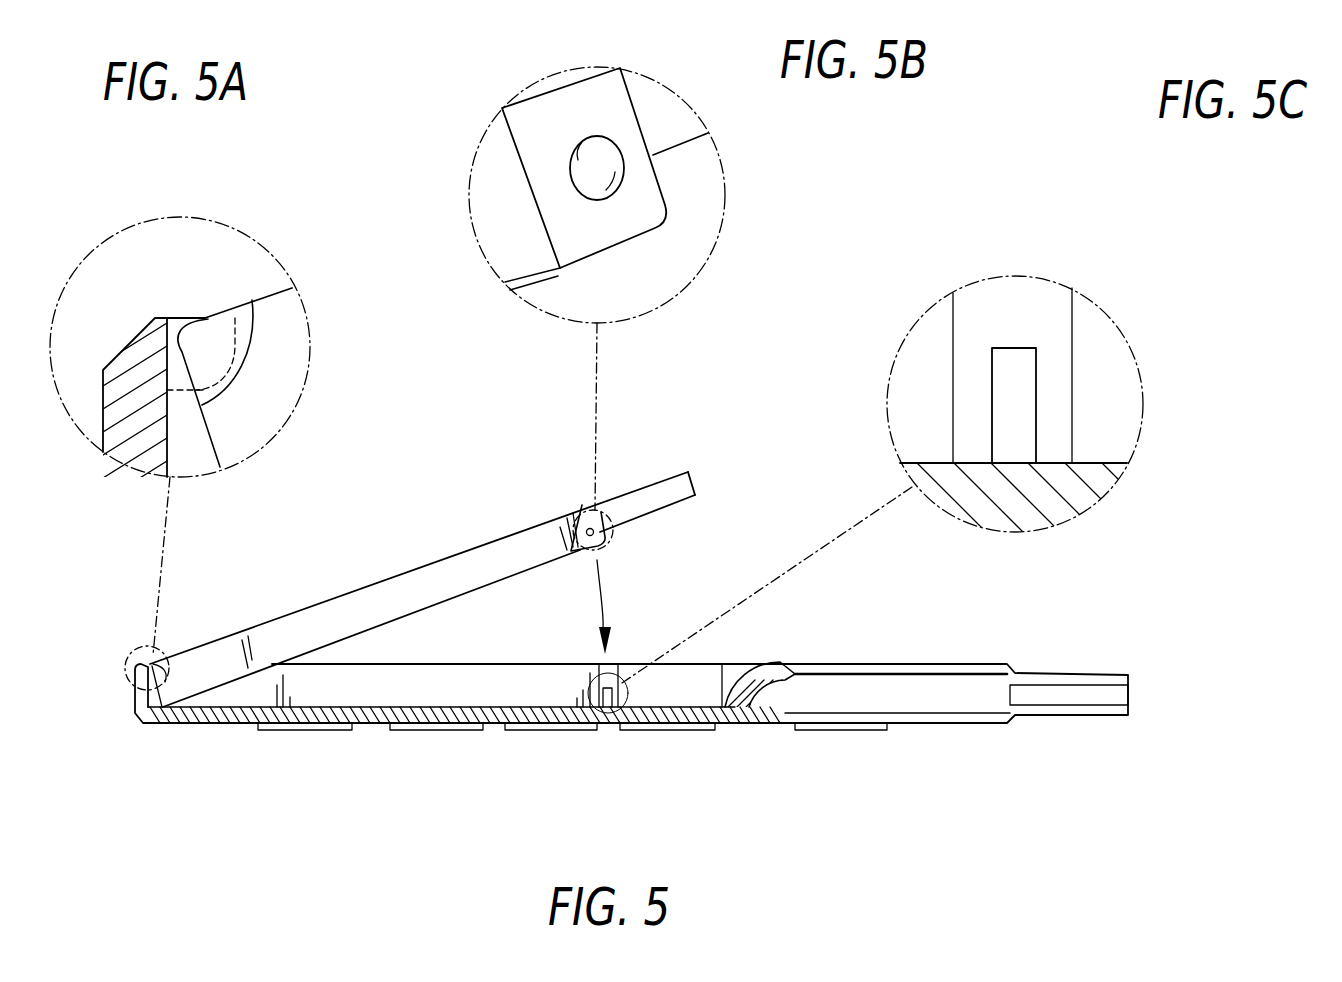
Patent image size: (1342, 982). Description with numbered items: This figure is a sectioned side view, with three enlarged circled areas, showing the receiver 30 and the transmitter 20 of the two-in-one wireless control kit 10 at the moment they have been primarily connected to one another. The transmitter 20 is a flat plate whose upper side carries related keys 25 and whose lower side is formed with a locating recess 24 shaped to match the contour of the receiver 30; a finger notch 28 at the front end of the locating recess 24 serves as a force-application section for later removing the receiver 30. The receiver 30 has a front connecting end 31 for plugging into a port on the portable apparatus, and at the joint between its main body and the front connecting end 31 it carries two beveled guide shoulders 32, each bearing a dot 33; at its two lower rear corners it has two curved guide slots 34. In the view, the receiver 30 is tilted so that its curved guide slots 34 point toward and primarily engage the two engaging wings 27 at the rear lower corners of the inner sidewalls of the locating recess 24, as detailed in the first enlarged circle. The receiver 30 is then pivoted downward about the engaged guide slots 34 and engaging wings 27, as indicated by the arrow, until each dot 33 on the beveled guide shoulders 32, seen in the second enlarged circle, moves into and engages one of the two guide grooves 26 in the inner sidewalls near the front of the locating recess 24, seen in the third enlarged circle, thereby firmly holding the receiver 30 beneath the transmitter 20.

In FIG. 5A, the card connector assembly 10 is at (283, 352).
In FIG. 5, the transmitter 20 is at (955, 668).
In FIG. 5A, the transmitter 20 is at (126, 435).
In FIG. 5C, the transmitter 20 is at (1025, 298).
In FIG. 5, the locating recess 24 is at (466, 688).
In FIG. 5, the keys 25 is at (527, 732).
In FIG. 5C, the guide groove 26 is at (1020, 405).
In FIG. 5, the engaging wing 27 is at (145, 662).
In FIG. 5A, the engaging wing 27 is at (196, 318).
In FIG. 5, the finger notch 28 is at (753, 686).
In FIG. 5, the receiver 30 is at (377, 602).
In FIG. 5, the front connecting end 31 is at (688, 471).
In FIG. 5, the beveled guide shoulder 32 is at (580, 503).
In FIG. 5B, the beveled guide shoulder 32 is at (637, 200).
In FIG. 5, the dot 33 is at (594, 532).
In FIG. 5B, the dot 33 is at (603, 155).
In FIG. 5, the curved guide slot 34 is at (156, 676).
In FIG. 5A, the curved guide slot 34 is at (249, 313).